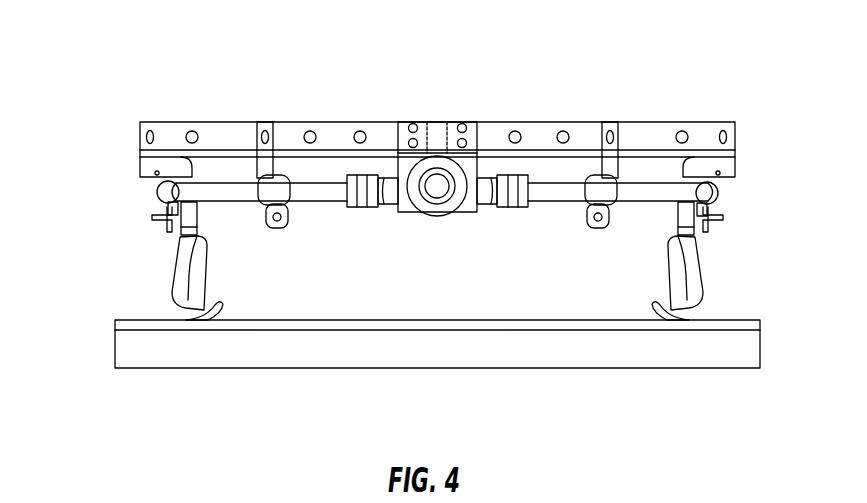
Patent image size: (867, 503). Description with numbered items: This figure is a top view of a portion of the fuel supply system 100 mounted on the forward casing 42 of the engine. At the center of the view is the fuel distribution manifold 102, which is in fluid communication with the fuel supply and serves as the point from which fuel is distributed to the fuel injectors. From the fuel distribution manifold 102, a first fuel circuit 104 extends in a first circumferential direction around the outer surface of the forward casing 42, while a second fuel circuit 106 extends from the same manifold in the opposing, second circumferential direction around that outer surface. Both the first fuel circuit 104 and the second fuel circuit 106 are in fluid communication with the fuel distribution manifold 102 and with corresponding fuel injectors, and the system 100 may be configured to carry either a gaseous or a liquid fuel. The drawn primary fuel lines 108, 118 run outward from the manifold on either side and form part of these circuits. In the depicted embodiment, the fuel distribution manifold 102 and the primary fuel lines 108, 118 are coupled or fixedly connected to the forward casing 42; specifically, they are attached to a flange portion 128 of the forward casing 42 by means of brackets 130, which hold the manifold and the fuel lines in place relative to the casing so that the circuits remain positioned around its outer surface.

The system 100 is at (550, 110).
The fuel distribution manifold 102 is at (472, 160).
The first fuel circuit 104 is at (196, 191).
The second fuel circuit 106 is at (727, 195).
The primary fuel line 108 is at (306, 190).
The primary fuel line 118 is at (660, 193).
The flange portion 128 is at (707, 121).
The brackets 130 is at (146, 177).
The forward casing 42 is at (418, 305).